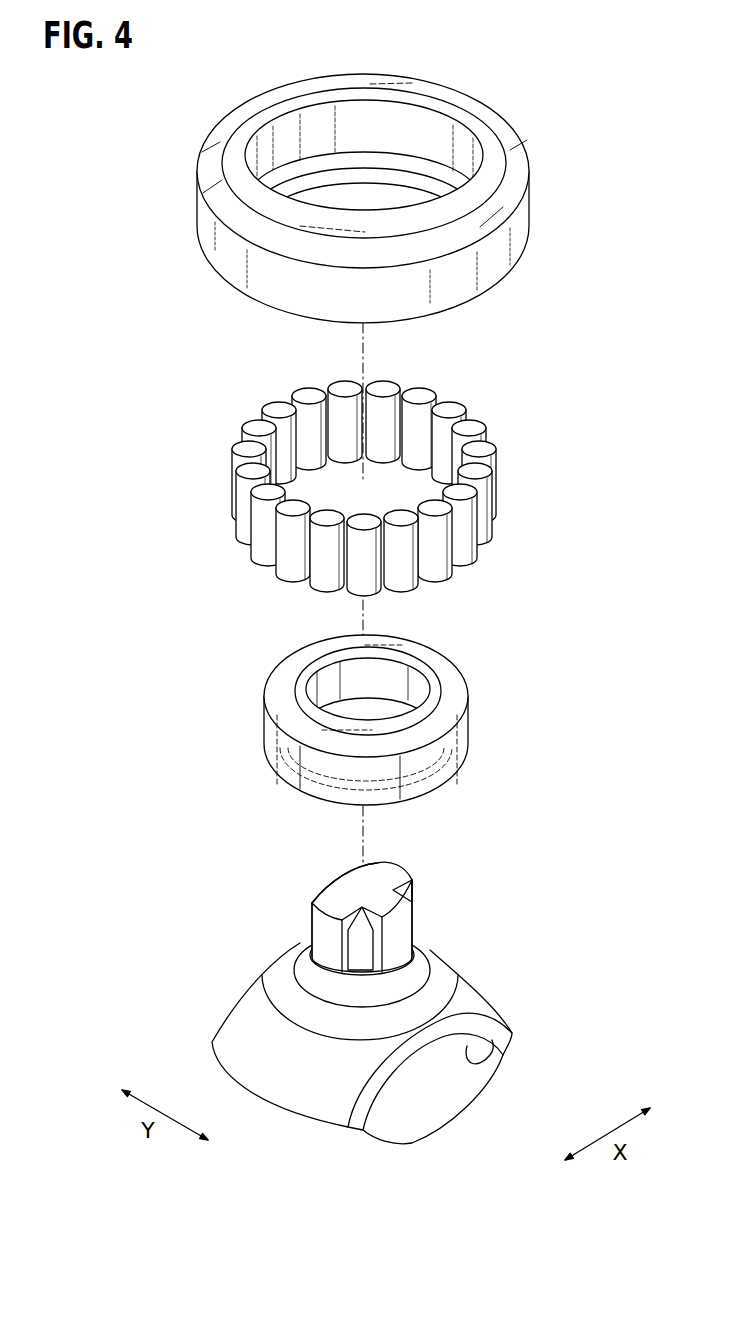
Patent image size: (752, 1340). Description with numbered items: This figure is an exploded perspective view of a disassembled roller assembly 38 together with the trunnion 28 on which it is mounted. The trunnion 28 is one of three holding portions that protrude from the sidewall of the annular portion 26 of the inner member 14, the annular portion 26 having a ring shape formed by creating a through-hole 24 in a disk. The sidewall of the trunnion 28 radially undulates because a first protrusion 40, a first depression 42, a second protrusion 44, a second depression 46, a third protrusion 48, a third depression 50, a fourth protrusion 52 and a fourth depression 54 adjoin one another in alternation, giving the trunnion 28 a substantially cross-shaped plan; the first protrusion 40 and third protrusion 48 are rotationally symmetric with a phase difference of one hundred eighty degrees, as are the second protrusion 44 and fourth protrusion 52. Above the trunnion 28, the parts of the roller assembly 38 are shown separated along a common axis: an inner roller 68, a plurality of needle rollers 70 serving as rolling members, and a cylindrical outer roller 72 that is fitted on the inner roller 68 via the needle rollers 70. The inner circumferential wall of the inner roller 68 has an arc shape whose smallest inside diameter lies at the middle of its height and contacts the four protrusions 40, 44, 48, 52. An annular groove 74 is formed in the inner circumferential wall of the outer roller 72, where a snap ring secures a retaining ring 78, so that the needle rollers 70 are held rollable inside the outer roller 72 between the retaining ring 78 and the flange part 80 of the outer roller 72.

The inner member 14 is at (376, 987).
The through-hole 24 is at (470, 1050).
The annular portion 26 is at (473, 998).
The trunnion 28 is at (375, 865).
The roller assembly 38 is at (549, 356).
The first protrusion 40 is at (348, 927).
The first depression 42 is at (361, 960).
The second protrusion 44 is at (397, 935).
The second depression 46 is at (413, 898).
The third protrusion 48 is at (395, 877).
The third depression 50 is at (362, 866).
The fourth protrusion 52 is at (333, 890).
The fourth depression 54 is at (310, 900).
The inner roller 68 is at (465, 740).
The needle rollers 70 is at (307, 393).
The outer roller 72 is at (397, 183).
The annular groove 74 is at (364, 155).
The retaining ring 78 is at (308, 170).
The flange part 80 is at (510, 132).